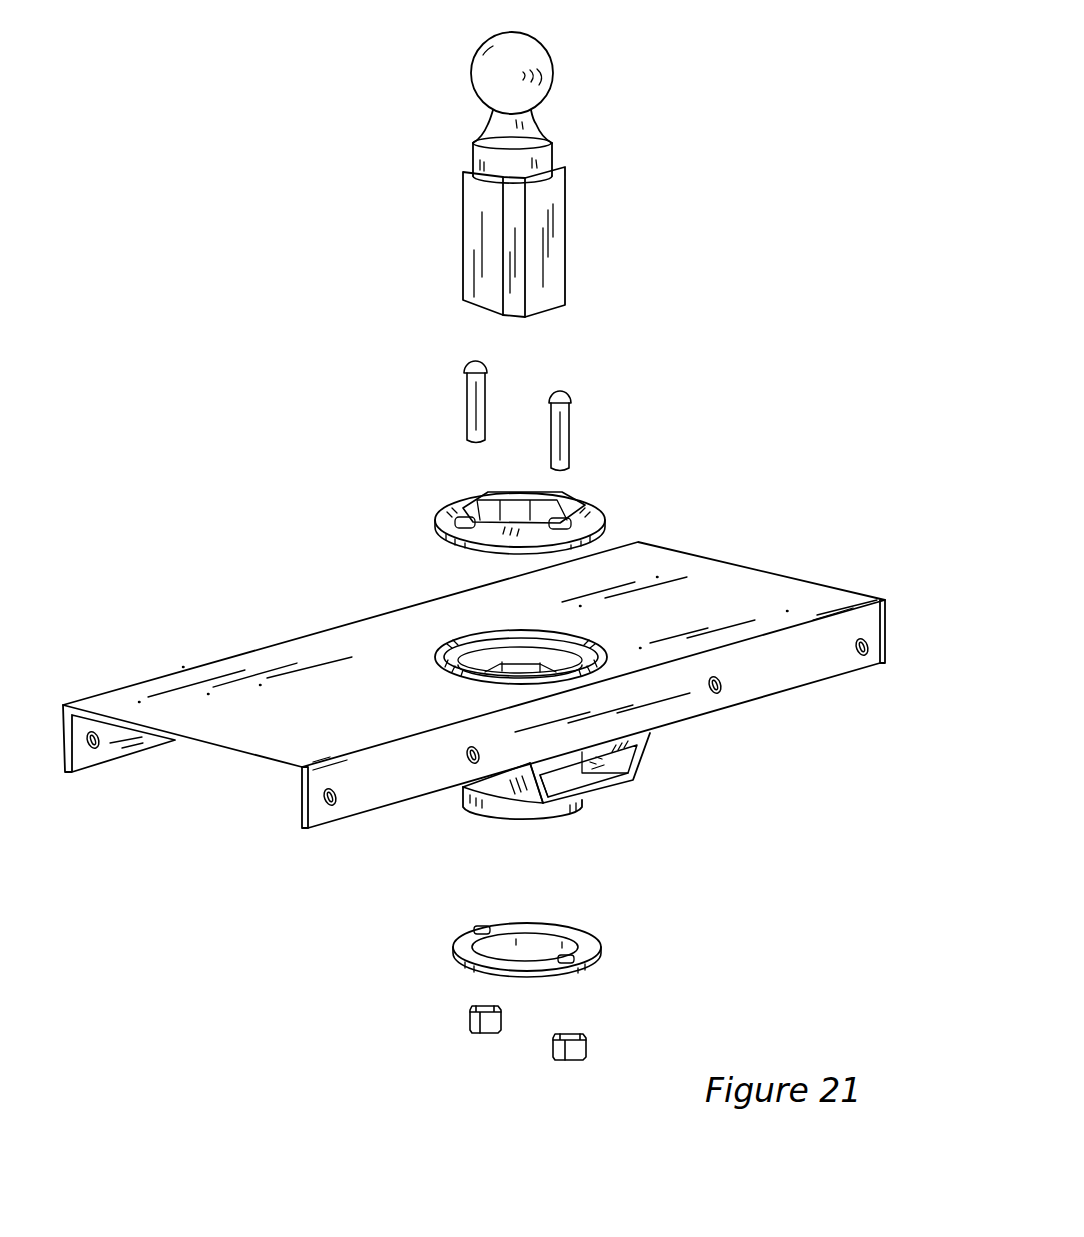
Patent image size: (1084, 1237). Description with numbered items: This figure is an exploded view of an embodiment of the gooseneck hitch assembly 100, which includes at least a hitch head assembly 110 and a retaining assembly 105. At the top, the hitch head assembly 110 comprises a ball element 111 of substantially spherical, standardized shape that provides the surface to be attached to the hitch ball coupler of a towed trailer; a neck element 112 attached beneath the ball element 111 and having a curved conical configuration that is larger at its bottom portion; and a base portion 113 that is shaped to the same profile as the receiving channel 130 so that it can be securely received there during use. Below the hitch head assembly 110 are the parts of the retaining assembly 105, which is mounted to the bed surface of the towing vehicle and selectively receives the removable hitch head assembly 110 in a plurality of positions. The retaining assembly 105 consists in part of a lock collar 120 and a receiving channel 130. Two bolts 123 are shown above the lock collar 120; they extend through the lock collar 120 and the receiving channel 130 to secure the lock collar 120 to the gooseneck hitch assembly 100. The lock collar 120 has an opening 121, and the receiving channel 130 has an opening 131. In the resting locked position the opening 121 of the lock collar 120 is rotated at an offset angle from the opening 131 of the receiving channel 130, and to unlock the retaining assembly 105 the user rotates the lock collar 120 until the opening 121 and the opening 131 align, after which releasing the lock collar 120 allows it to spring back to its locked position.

The gooseneck hitch assembly 100 is at (292, 250).
The retaining assembly 105 is at (475, 825).
The hitch head assembly 110 is at (605, 160).
The ball element 111 is at (537, 52).
The neck element 112 is at (488, 137).
The base portion 113 is at (475, 232).
The lock collar 120 is at (613, 515).
The opening 121 is at (480, 508).
The bolt 123 is at (473, 403).
The receiving channel 130 is at (557, 663).
The opening 131 is at (490, 670).